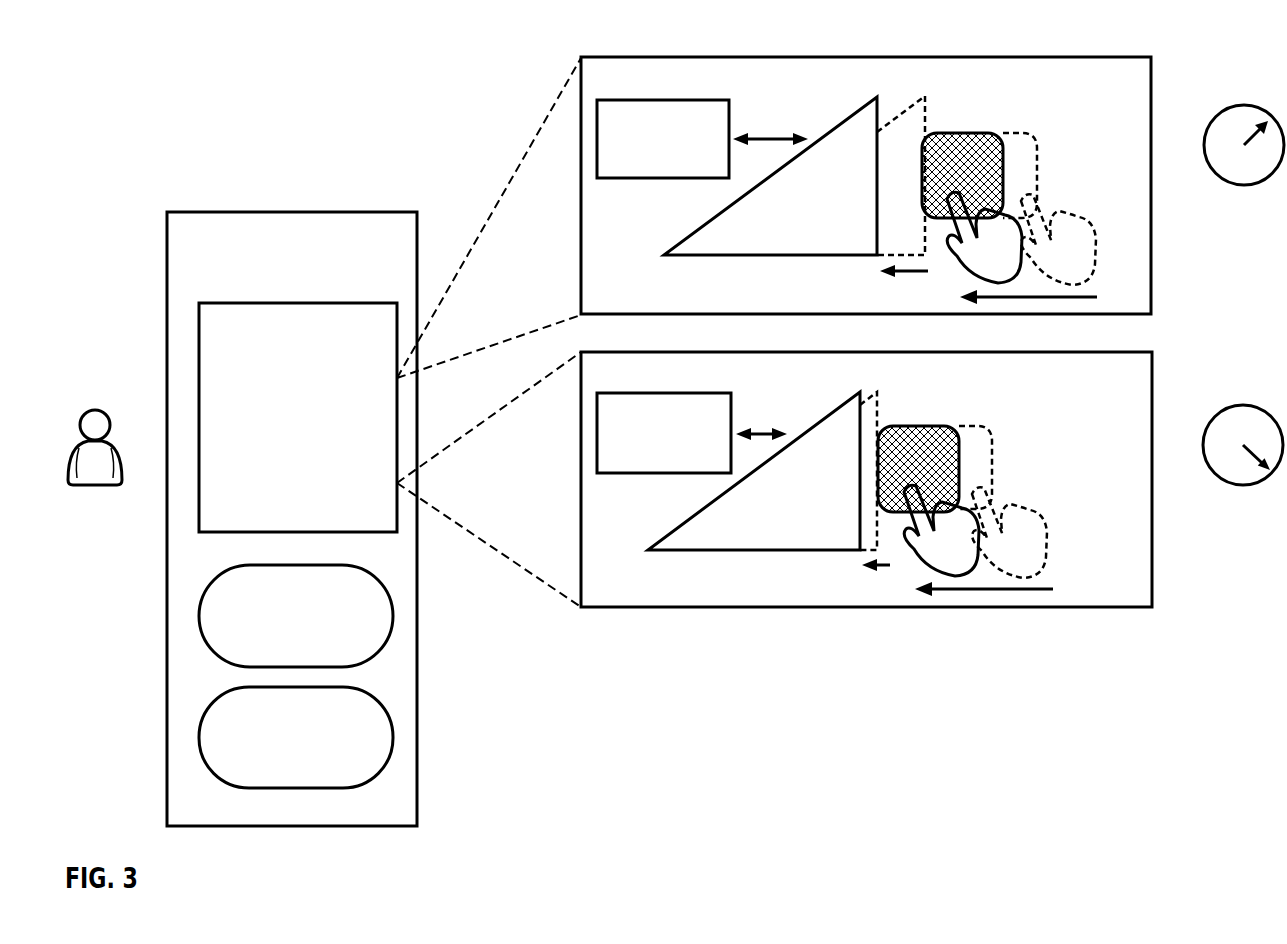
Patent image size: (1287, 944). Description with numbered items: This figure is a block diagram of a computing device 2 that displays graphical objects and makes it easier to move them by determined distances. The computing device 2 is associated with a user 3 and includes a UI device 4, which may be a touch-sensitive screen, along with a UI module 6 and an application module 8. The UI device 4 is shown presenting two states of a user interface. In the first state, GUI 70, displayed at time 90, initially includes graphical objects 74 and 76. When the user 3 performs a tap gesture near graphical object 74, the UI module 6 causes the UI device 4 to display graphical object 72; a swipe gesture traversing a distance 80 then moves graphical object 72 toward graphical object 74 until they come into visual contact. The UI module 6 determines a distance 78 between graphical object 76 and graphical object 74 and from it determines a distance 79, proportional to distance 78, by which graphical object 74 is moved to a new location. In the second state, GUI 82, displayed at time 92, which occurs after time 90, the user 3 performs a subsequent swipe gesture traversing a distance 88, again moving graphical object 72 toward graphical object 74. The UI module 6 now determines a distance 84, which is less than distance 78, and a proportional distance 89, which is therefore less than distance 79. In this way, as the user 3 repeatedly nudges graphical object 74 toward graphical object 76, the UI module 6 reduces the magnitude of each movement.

The computing device 2 is at (291, 280).
The user 3 is at (89, 547).
The UI device 4 is at (292, 441).
The UI module 6 is at (290, 639).
The application module 8 is at (290, 772).
The GUI 70 is at (1107, 111).
The graphical object 72 is at (965, 130).
The graphical object 74 is at (855, 113).
The graphical object 76 is at (730, 110).
The distance 78 is at (770, 131).
The distance 79 is at (892, 271).
The distance 80 is at (1015, 297).
The GUI 82 is at (1107, 403).
The distance 84 is at (761, 424).
The distance 88 is at (971, 589).
The distance 89 is at (863, 565).
The time 90 is at (1235, 243).
The time 92 is at (1235, 543).